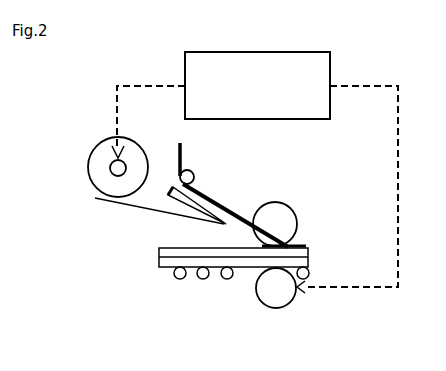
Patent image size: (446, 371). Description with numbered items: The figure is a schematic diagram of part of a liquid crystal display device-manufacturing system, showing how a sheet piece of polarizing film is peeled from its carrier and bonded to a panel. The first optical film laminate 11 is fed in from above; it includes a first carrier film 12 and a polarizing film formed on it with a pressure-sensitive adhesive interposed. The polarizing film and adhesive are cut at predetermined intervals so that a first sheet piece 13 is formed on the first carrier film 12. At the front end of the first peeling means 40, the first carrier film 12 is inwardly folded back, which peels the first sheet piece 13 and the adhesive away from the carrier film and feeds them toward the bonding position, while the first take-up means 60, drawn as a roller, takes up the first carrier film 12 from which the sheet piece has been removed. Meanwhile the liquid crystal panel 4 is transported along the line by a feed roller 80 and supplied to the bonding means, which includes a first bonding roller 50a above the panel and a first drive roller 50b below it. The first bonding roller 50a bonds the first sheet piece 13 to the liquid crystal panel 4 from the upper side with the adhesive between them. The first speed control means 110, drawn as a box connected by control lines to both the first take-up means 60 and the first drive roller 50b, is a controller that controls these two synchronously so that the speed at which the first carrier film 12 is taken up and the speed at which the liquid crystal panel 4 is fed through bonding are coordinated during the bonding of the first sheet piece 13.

The first speed control means 110 is at (197, 73).
The first take-up means 60 is at (110, 166).
The first carrier film 12 is at (140, 207).
The first peeling means 40 is at (172, 192).
The first optical film laminate 11 is at (182, 150).
The first sheet piece 13 is at (230, 226).
The first bonding roller 50a is at (284, 205).
The liquid crystal panel 4 is at (154, 257).
The feed roller 80 is at (235, 283).
The first drive roller 50b is at (277, 297).